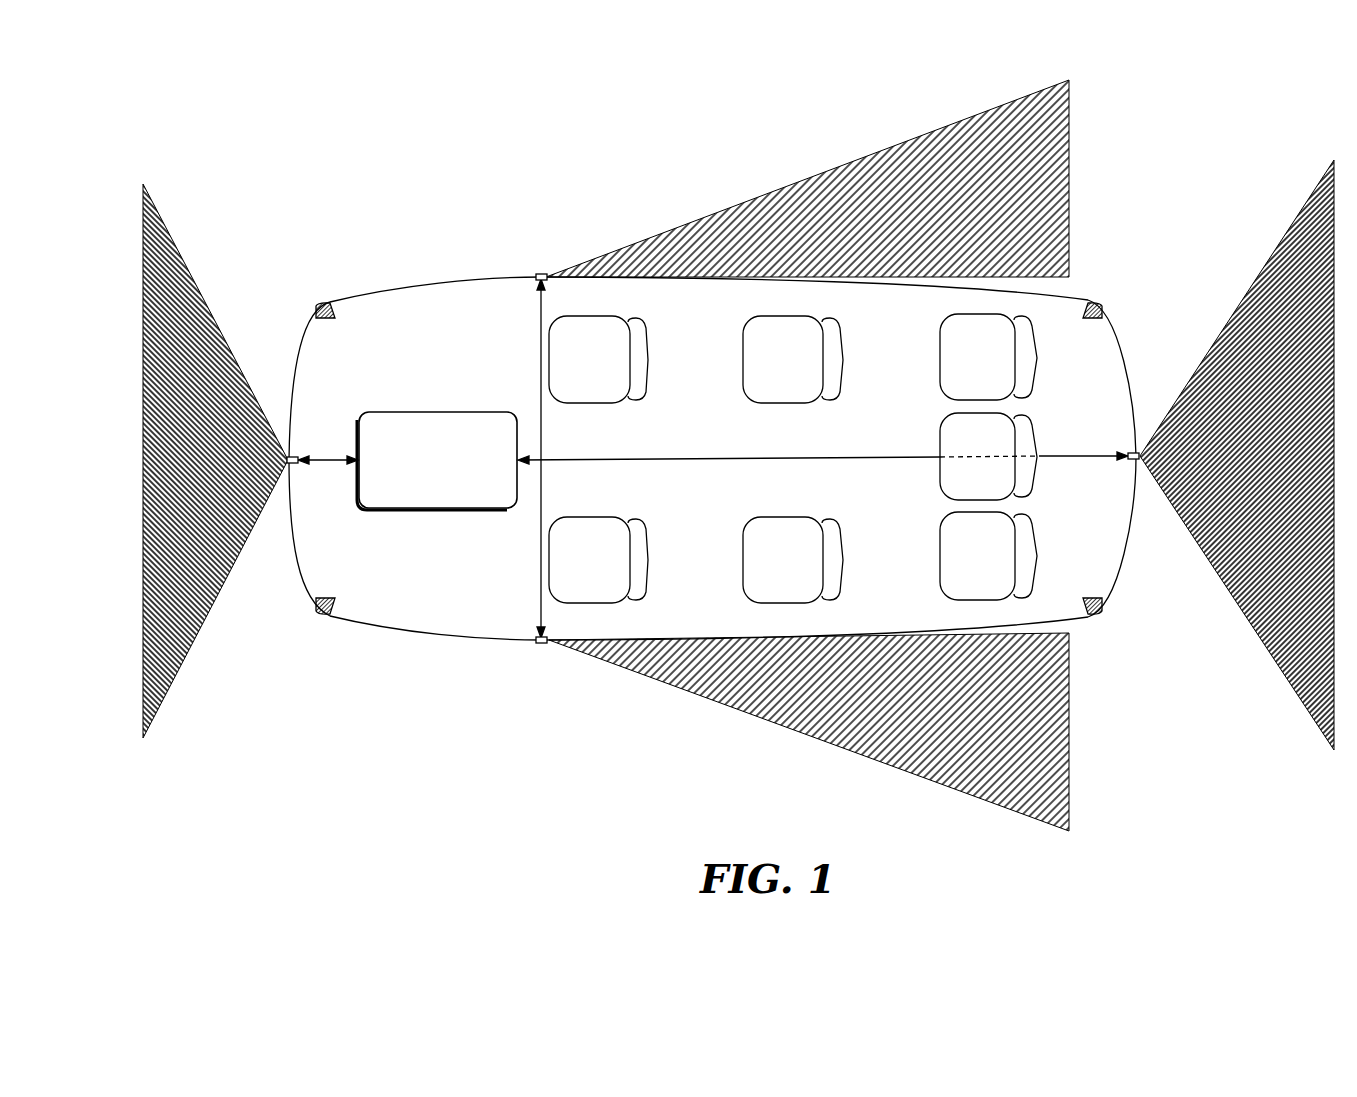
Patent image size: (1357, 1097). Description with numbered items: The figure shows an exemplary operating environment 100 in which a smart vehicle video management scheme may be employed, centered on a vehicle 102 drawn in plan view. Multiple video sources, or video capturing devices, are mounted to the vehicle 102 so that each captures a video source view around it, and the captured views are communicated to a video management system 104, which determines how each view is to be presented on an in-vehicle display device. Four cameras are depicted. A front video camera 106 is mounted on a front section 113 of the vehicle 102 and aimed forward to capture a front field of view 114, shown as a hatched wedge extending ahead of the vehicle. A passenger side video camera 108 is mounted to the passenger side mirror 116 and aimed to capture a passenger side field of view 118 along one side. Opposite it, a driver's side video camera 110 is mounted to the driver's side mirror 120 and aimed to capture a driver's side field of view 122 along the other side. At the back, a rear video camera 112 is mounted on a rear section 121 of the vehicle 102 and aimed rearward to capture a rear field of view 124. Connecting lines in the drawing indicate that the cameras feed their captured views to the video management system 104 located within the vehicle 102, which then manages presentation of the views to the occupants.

The operating environment 100 is at (322, 106).
The vehicle 102 is at (717, 482).
The video management system 104 is at (438, 412).
The front video camera 106 is at (295, 456).
The passenger side video camera 108 is at (538, 272).
The driver's side video camera 110 is at (538, 645).
The rear video camera 112 is at (1131, 460).
The front section 113 is at (292, 540).
The front field of view 114 is at (206, 305).
The passenger side mirror 116 is at (546, 272).
The passenger side field of view 118 is at (1068, 193).
The driver's side mirror 120 is at (545, 648).
The rear section 121 is at (1131, 386).
The driver's side field of view 122 is at (1072, 672).
The rear field of view 124 is at (1283, 251).